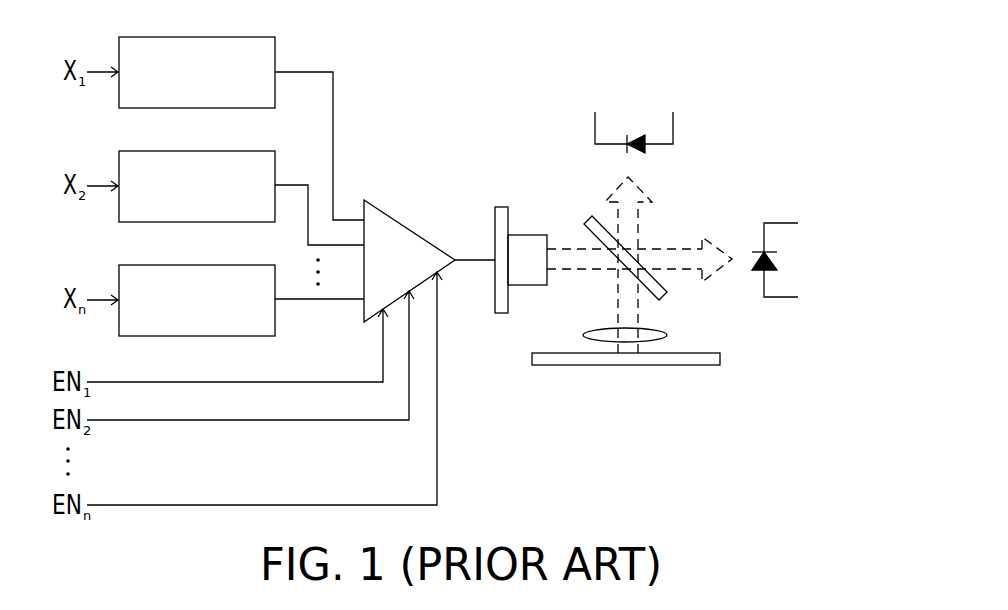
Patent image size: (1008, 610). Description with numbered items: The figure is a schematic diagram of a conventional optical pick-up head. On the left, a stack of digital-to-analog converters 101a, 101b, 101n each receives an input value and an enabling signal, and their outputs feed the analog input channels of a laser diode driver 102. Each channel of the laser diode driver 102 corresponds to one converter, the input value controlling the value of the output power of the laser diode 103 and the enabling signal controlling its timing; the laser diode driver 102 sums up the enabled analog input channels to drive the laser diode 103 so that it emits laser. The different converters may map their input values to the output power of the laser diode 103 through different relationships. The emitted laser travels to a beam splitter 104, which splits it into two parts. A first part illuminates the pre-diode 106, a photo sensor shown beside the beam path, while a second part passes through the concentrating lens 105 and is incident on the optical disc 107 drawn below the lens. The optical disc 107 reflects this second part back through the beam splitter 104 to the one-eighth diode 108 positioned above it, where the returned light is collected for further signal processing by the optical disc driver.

The digital-to-analog converter 101a is at (197, 37).
The digital-to-analog converter 101b is at (197, 151).
The digital-to-analog converter 101n is at (197, 265).
The laser diode driver 102 is at (400, 247).
The laser diode 103 is at (521, 246).
The beam splitter 104 is at (664, 290).
The concentrating lens 105 is at (648, 334).
The pre-diode 106 is at (775, 257).
The optical disc 107 is at (662, 365).
The one-eighth diode 108 is at (634, 136).